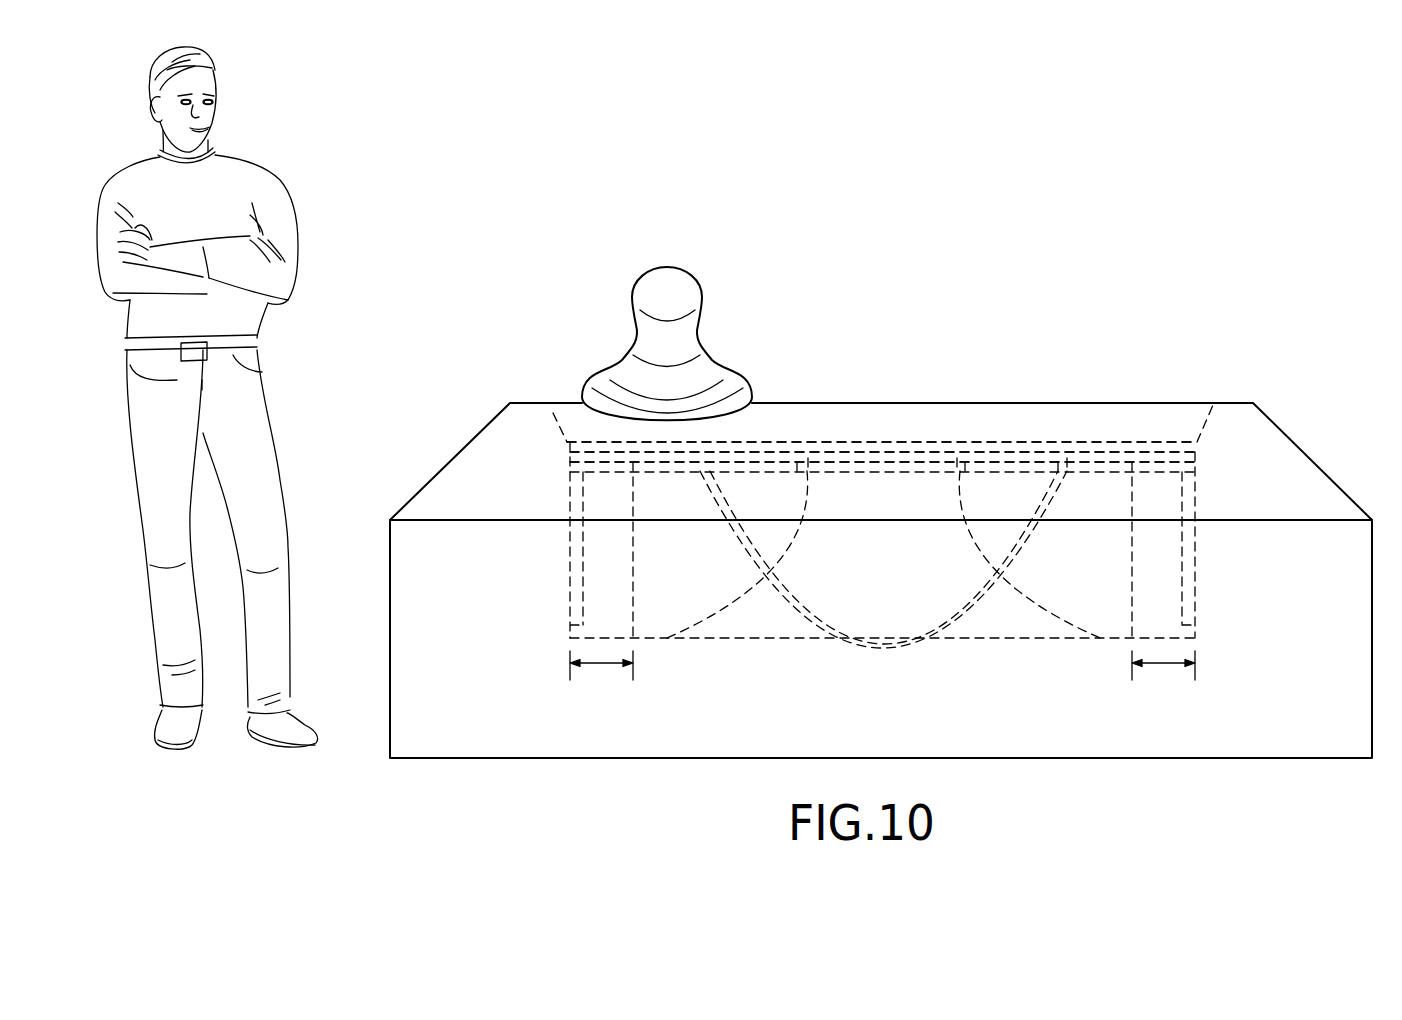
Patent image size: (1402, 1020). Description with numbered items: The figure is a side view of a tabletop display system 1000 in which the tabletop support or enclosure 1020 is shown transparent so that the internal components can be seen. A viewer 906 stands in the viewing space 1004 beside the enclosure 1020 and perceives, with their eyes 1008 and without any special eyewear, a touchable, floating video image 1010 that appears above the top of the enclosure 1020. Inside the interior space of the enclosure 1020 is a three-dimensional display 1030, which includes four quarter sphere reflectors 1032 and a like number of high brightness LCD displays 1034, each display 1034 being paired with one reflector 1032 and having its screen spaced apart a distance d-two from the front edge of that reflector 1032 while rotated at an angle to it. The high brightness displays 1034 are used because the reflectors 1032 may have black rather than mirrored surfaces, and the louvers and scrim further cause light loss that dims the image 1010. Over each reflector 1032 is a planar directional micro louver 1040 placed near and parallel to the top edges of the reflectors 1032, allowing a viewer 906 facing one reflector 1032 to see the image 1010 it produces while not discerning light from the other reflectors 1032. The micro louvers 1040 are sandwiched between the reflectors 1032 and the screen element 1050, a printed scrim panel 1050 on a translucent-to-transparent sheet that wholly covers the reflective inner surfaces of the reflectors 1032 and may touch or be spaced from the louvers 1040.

The viewer 906 is at (278, 662).
The display system 1000 is at (1200, 300).
The viewing space 1004 is at (227, 435).
The eyes 1008 is at (186, 107).
The touchable, floating video image 1010 is at (687, 267).
The tabletop support or enclosure 1020 is at (453, 763).
The 3D display 1030 is at (1233, 473).
The quarter sphere reflectors 1032 is at (780, 630).
The high brightness LCD displays 1034 is at (567, 616).
The directional micro louver 1040 is at (740, 475).
The screen element 1050 is at (1117, 455).